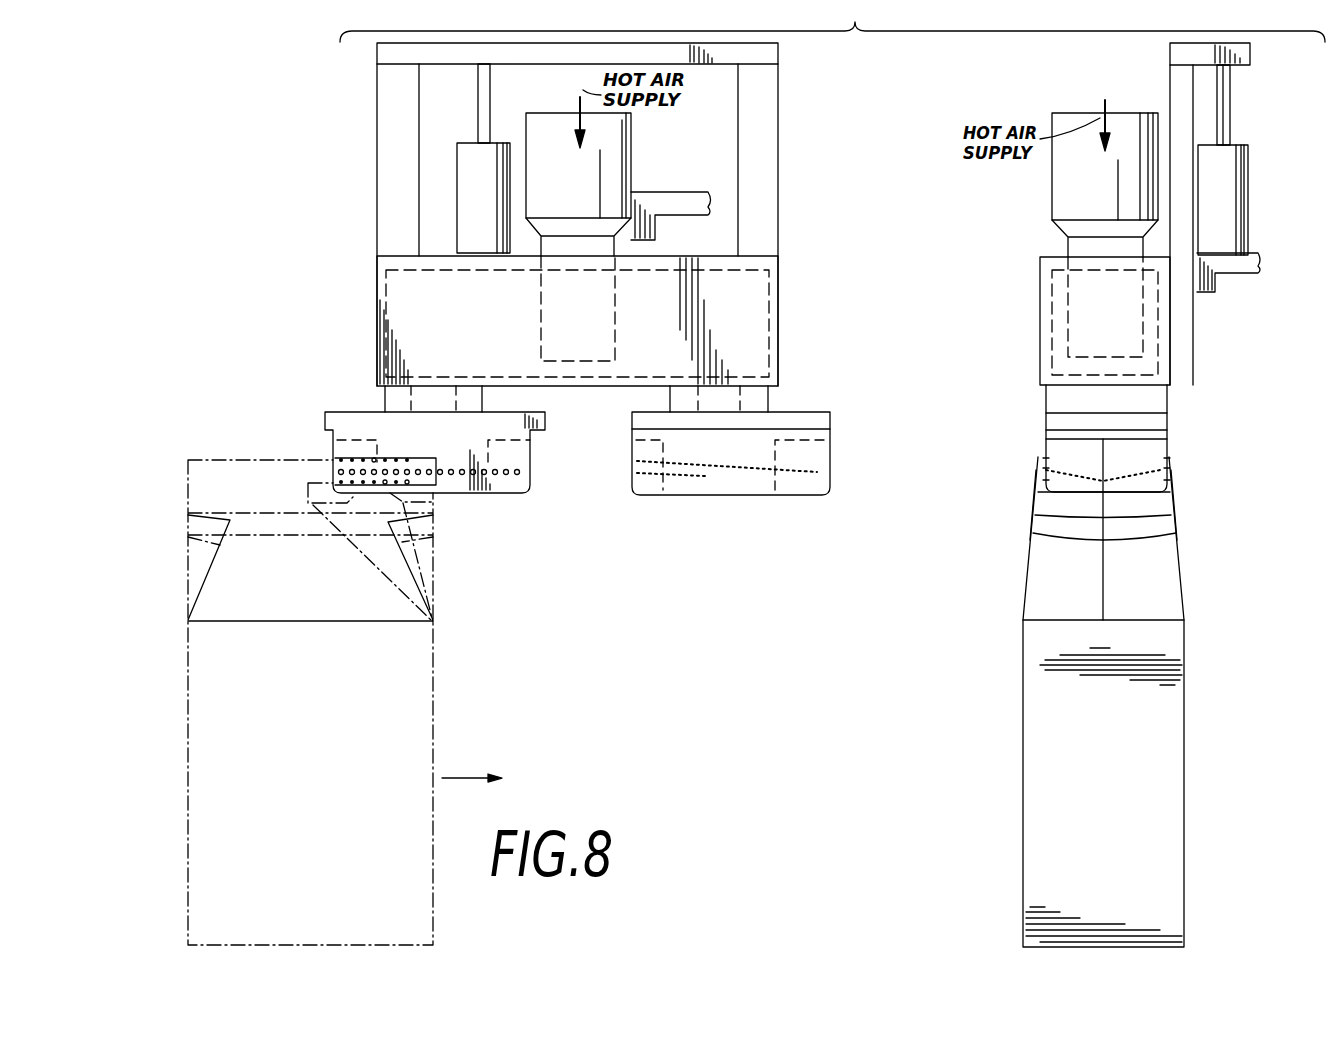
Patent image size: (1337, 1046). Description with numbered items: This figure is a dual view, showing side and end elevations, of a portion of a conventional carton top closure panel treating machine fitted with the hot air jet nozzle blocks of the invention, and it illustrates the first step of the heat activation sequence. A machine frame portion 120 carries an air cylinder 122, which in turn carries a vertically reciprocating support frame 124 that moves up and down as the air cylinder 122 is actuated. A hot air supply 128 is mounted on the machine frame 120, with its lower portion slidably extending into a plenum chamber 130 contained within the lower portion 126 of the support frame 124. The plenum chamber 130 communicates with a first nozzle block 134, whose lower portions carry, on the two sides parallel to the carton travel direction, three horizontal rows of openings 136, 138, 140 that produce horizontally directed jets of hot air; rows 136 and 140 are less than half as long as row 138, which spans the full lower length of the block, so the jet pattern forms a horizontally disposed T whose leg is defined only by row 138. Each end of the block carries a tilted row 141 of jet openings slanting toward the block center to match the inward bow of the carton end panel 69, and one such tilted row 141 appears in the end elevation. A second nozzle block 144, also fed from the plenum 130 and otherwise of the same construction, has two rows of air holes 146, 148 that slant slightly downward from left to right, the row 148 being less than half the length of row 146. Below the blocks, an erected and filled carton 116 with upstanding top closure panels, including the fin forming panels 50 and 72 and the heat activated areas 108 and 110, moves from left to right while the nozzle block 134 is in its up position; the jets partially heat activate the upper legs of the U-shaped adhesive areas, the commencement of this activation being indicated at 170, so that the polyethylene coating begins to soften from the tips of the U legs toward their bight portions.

The support frame 124 is at (780, 47).
The air cylinder 122 is at (470, 183).
The hot air supply 128 is at (634, 148).
The machine frame portion 120 is at (665, 195).
The lower portion of support frame 126 is at (780, 262).
The plenum chamber 130 is at (752, 338).
The first nozzle block 134 is at (383, 410).
The first row of openings 136 is at (360, 460).
The second row of openings 138 is at (455, 474).
The third row of openings 140 is at (400, 482).
The second nozzle block 144 is at (770, 403).
The row of air holes 146 is at (715, 467).
The row of air holes 148 is at (670, 476).
The commencement of upper U leg heat activation 170 is at (335, 472).
The carton 116 is at (434, 698).
The tilted row of hot air jet openings 141 is at (1170, 492).
The fin forming panel 50 is at (1035, 497).
The fin forming panel 72 is at (1178, 498).
The carton end panel 69 is at (1133, 530).
The heat activated area 110 is at (1060, 532).
The heat activated area 108 is at (1145, 532).